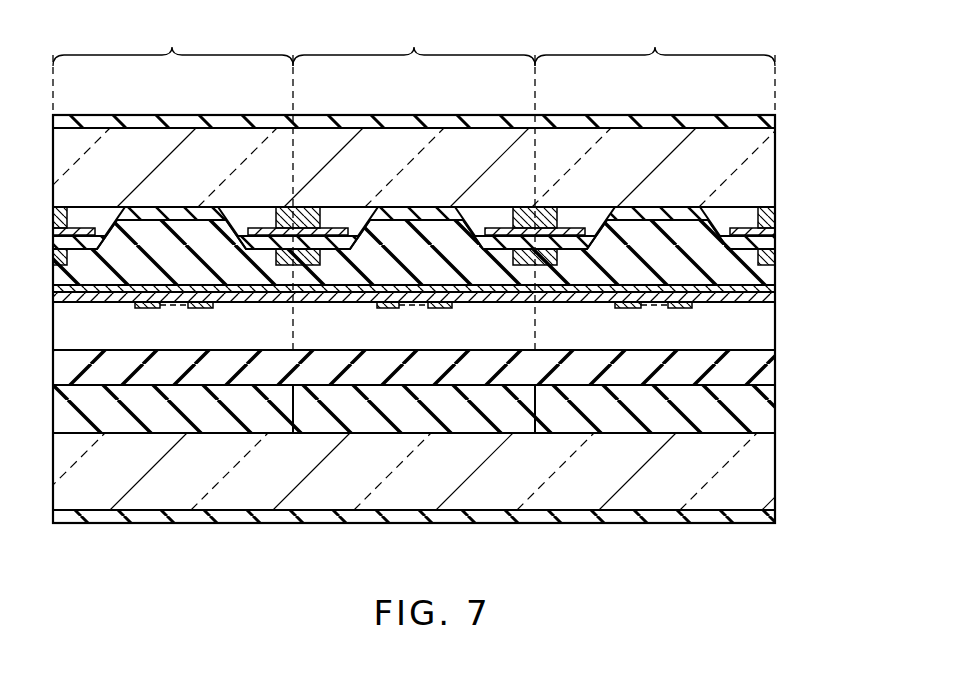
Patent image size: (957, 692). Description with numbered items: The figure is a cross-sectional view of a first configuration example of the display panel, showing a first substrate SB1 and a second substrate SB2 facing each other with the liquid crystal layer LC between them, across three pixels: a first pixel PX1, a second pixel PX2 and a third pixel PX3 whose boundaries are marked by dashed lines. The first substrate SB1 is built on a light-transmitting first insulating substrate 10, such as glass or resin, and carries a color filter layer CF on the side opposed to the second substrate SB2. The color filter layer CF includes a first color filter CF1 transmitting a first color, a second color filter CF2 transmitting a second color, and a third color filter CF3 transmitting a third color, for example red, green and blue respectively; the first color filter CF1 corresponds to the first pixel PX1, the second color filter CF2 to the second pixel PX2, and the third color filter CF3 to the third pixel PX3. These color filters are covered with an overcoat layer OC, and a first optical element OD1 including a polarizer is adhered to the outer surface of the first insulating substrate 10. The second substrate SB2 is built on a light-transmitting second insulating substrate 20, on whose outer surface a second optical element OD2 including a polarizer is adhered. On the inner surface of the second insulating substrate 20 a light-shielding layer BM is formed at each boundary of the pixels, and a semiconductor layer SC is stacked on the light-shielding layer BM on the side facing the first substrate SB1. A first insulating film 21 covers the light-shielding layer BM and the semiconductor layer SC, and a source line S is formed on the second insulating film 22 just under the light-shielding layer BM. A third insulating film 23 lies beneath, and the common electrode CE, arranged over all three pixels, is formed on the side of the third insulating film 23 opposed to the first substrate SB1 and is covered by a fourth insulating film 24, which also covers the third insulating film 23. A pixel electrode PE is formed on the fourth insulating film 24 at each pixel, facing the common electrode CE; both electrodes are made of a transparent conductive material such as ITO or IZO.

The first pixel PX1 is at (173, 68).
The second pixel PX2 is at (414, 185).
The third pixel PX3 is at (655, 185).
The light-shielding layer BM is at (278, 240).
The semiconductor layer SC is at (303, 230).
The second optical element OD2 is at (764, 122).
The second insulating substrate 20 is at (763, 158).
The second substrate SB2 is at (777, 192).
The first insulating film 21 is at (770, 228).
The second insulating film 22 is at (770, 241).
The third insulating film 23 is at (762, 277).
The fourth insulating film 24 is at (770, 299).
The source line S is at (80, 282).
The pixel electrode PE is at (196, 309).
The common electrode CE is at (576, 290).
The liquid crystal layer LC is at (778, 336).
The overcoat layer OC is at (778, 366).
The color filter layer CF is at (777, 400).
The first color filter CF1 is at (162, 420).
The second color filter CF2 is at (425, 420).
The third color filter CF3 is at (630, 420).
The first substrate SB1 is at (779, 433).
The first insulating substrate 10 is at (778, 484).
The first optical element OD1 is at (778, 518).